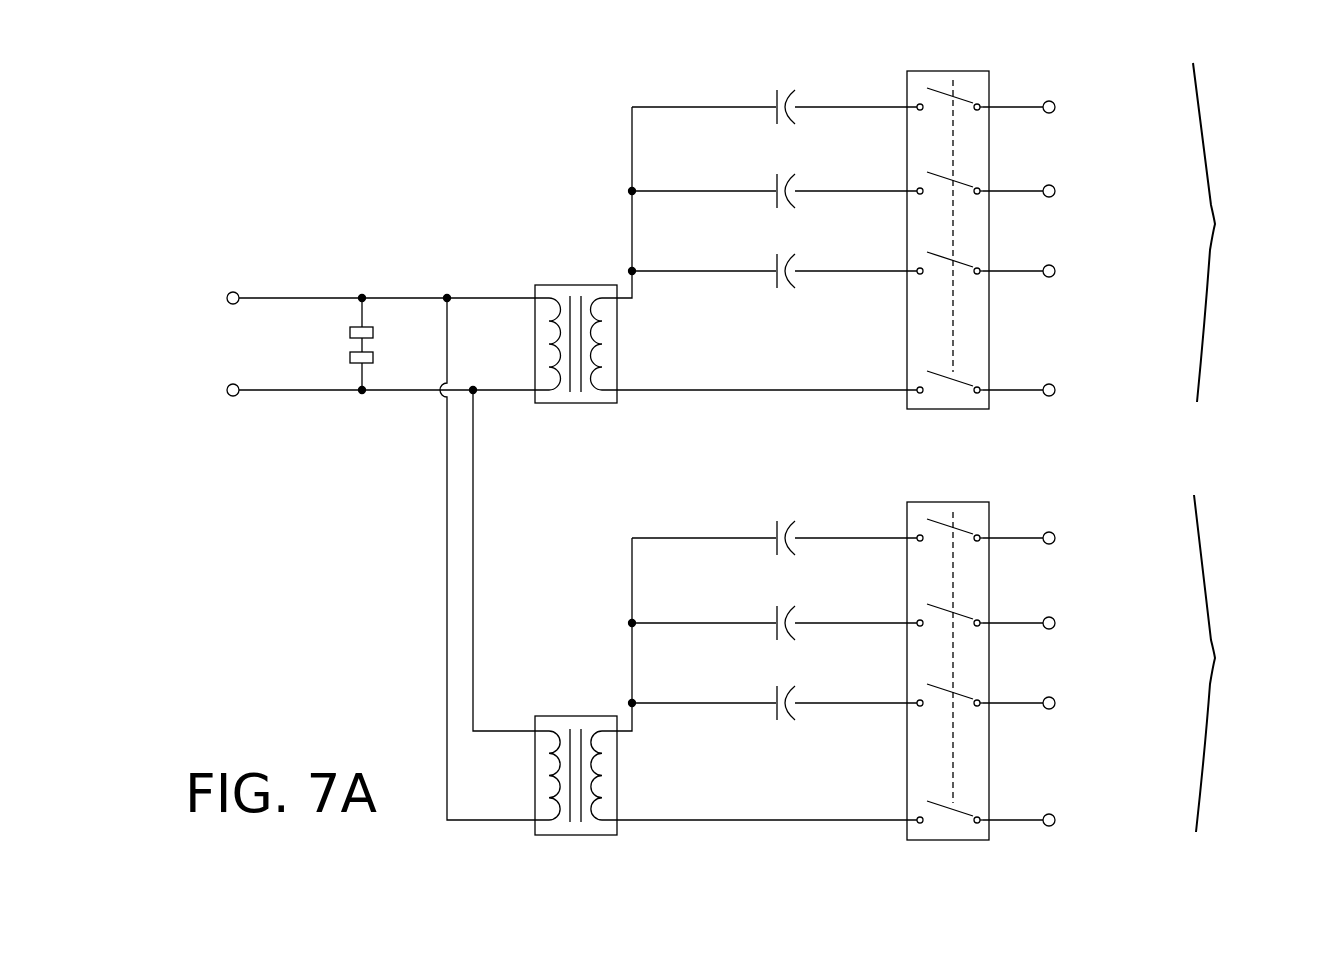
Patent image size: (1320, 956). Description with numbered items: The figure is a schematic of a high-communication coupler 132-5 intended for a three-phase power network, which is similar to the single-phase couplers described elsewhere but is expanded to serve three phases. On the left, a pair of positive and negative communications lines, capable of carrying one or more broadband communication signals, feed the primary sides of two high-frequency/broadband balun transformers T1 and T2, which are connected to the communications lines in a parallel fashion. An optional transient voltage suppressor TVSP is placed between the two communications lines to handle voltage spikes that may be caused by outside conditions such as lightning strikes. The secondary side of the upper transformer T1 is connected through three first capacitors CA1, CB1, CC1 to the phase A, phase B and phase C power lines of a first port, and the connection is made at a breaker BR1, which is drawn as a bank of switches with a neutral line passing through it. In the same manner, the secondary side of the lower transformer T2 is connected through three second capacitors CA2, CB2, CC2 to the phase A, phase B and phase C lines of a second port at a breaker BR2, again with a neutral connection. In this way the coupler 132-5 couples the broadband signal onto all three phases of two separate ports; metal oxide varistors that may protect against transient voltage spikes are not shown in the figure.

The high-communication coupler 132-5 is at (372, 147).
The transient voltage suppressor TVSP is at (331, 344).
The balun transformer T1 is at (576, 330).
The balun transformer T2 is at (576, 762).
The first capacitor CA1 is at (786, 92).
The first capacitor CB1 is at (786, 176).
The first capacitor CC1 is at (786, 256).
The second capacitor CA2 is at (786, 523).
The second capacitor CB2 is at (786, 608).
The second capacitor CC2 is at (786, 688).
The breaker BR1 is at (948, 261).
The breaker BR2 is at (948, 691).